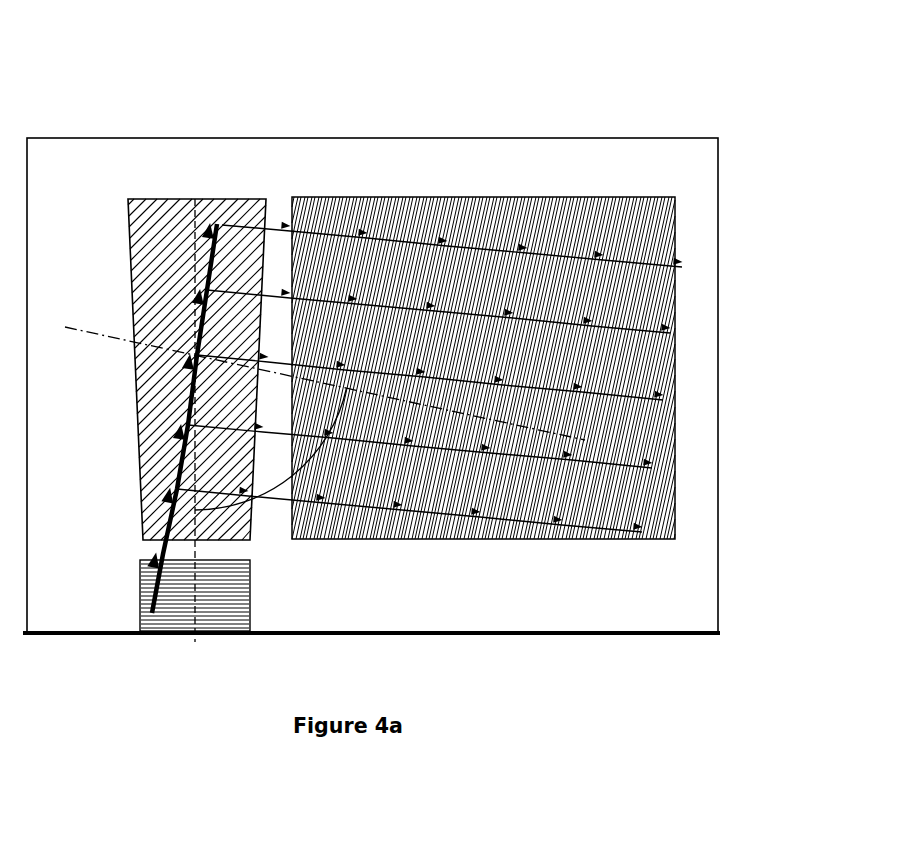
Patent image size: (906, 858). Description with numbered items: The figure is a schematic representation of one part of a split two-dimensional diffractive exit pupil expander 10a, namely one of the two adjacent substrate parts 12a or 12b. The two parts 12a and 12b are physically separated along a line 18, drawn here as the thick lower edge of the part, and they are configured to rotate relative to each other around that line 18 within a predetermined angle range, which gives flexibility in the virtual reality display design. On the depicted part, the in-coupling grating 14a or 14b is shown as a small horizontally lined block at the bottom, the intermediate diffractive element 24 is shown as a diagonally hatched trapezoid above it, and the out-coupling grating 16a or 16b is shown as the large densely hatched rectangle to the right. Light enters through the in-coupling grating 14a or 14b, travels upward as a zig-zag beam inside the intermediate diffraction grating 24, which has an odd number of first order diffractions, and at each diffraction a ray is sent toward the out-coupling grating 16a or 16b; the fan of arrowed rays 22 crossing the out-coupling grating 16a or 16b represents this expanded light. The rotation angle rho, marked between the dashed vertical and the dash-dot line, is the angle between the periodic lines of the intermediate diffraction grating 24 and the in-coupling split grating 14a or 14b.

The split two-dimensional diffractive exit pupil expander 10a is at (553, 107).
The adjacent part 12a is at (372, 360).
The adjacent part 12b is at (301, 170).
The in-coupling grating 14a is at (278, 595).
The in-coupling grating 14b is at (233, 613).
The out-coupling grating 16a is at (483, 345).
The out-coupling grating 16b is at (448, 203).
The line 18 is at (292, 637).
The light rays 22 is at (400, 522).
The intermediate diffractive element 24 is at (152, 382).